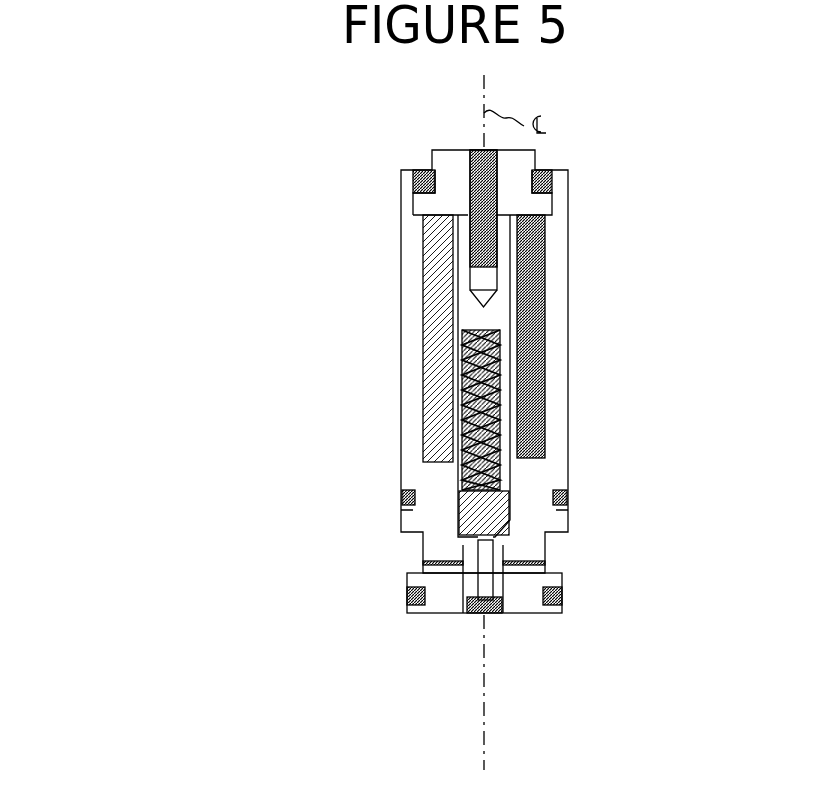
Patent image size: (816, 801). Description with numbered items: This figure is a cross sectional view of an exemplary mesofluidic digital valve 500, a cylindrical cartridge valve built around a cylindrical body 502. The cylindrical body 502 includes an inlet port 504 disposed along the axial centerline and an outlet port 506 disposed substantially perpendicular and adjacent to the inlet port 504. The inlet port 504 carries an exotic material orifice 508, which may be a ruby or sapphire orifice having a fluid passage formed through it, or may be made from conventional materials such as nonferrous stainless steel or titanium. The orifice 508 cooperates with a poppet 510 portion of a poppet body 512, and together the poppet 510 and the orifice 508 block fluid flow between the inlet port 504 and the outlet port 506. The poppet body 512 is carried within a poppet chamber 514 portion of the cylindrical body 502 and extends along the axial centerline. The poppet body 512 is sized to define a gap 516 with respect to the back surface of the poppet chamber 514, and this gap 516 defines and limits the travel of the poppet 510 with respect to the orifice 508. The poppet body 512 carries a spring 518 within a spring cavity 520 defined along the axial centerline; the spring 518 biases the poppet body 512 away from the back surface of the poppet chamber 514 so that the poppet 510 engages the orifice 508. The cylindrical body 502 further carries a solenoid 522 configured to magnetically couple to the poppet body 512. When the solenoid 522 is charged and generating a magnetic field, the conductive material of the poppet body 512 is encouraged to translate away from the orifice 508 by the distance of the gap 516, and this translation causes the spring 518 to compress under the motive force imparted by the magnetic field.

The mesofluidic digital valve 500 is at (160, 288).
The cylindrical body 502 is at (569, 240).
The inlet port 504 is at (448, 650).
The outlet port 506 is at (413, 569).
The exotic material orifice 508 is at (491, 612).
The poppet 510 is at (545, 560).
The poppet body 512 is at (497, 533).
The poppet chamber 514 is at (470, 522).
The gap 516 is at (460, 330).
The spring 518 is at (470, 433).
The spring cavity 520 is at (477, 393).
The solenoid 522 is at (440, 245).